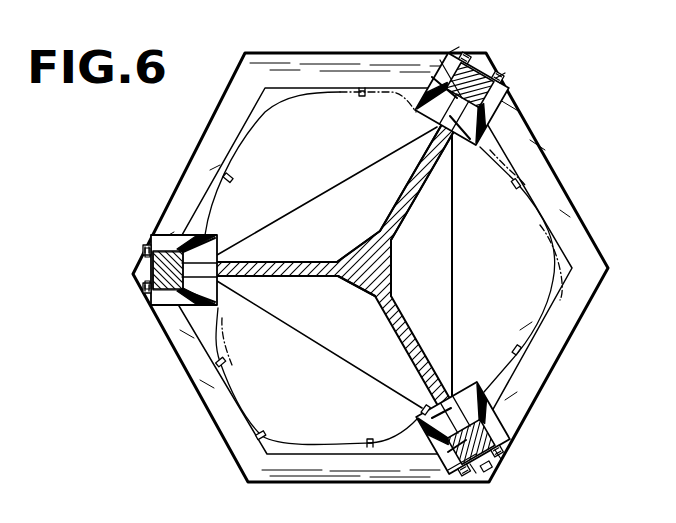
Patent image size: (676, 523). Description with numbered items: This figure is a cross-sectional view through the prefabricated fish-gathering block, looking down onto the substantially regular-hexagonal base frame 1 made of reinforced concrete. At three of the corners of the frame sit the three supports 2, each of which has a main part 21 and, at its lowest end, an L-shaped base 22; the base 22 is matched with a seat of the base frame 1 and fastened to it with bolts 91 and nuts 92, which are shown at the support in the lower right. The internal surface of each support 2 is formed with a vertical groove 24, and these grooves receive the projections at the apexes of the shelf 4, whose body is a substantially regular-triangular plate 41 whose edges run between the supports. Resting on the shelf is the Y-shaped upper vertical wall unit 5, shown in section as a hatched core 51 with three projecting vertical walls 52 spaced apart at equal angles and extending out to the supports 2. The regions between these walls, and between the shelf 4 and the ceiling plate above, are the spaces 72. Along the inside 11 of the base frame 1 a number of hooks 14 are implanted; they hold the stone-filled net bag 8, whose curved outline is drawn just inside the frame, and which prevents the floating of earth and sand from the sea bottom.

The base frame 1 is at (550, 189).
The inside of the base frame 11 is at (574, 266).
The hooks 14 is at (233, 178).
The support 2 is at (470, 63).
The main part 21 is at (500, 78).
The L-shaped base 22 is at (492, 105).
The vertical groove 24 is at (167, 253).
The shelf 4 is at (434, 297).
The regular-triangular plate 41 is at (444, 327).
The upper vertical wall unit 5 is at (395, 273).
The core 51 is at (394, 243).
The projecting vertical walls 52 is at (423, 170).
The spaces 72 is at (367, 226).
The stone-filled net bag 8 is at (266, 434).
The bolts 91 is at (486, 468).
The nuts 92 is at (512, 352).